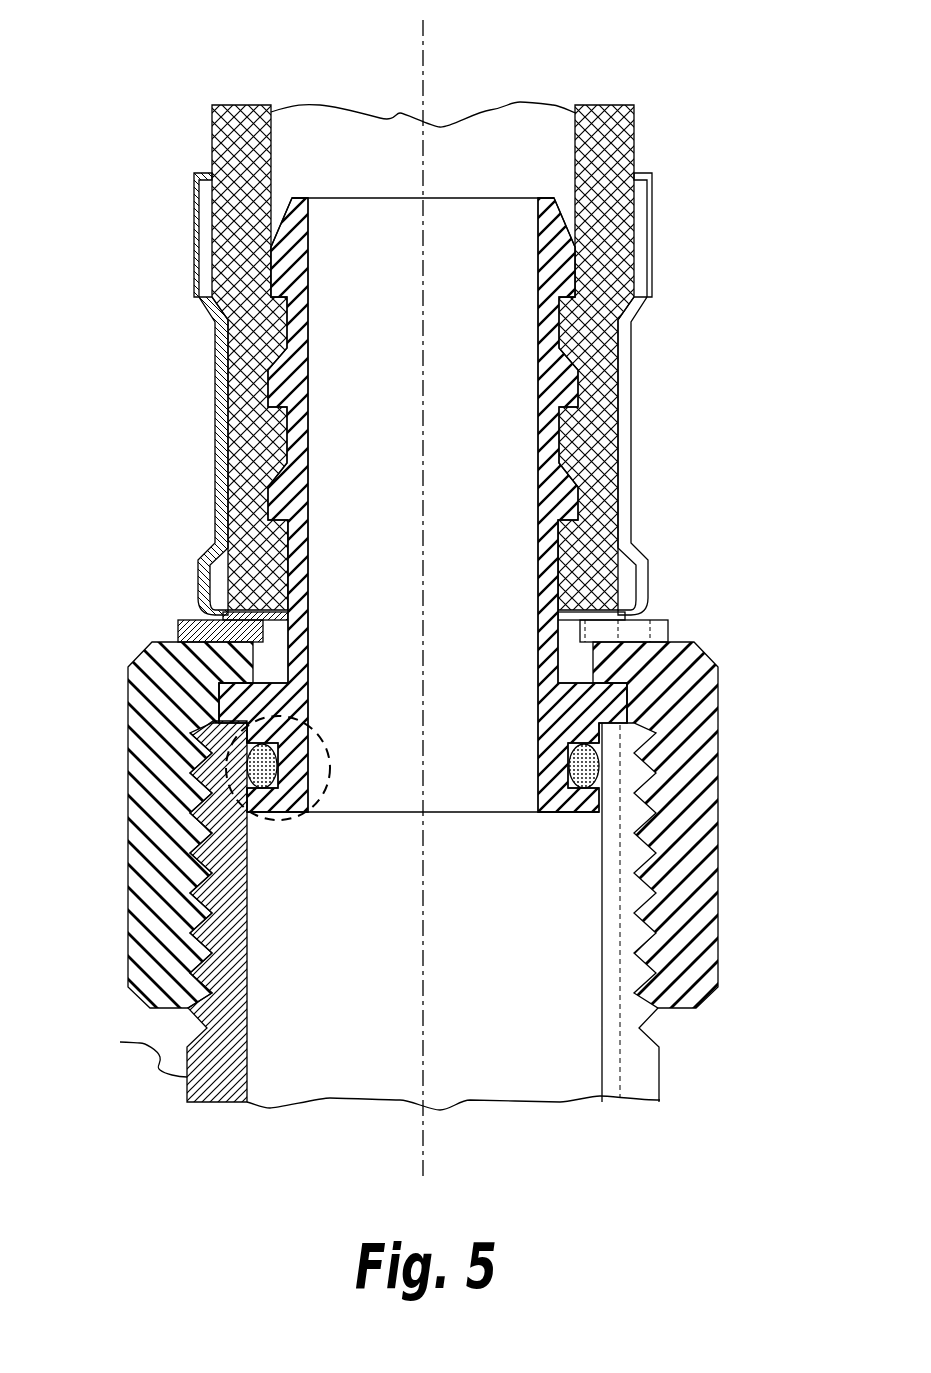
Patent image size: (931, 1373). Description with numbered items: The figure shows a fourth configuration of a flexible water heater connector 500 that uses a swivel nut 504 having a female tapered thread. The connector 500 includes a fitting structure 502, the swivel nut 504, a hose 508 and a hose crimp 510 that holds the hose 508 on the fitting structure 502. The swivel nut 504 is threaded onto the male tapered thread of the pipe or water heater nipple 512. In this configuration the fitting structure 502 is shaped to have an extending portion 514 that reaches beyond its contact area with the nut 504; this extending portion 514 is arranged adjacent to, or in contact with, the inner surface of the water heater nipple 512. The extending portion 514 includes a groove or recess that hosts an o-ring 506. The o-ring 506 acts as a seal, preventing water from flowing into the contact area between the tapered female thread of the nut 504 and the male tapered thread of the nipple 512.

The flexible water heater connector 500 is at (704, 149).
The fitting structure 502 is at (288, 437).
The swivel nut 504 is at (698, 830).
The o-ring 506 is at (268, 787).
The hose 508 is at (230, 151).
The hose crimp 510 is at (623, 368).
The water heater nipple 512 is at (187, 1066).
The extending portion 514 is at (317, 742).